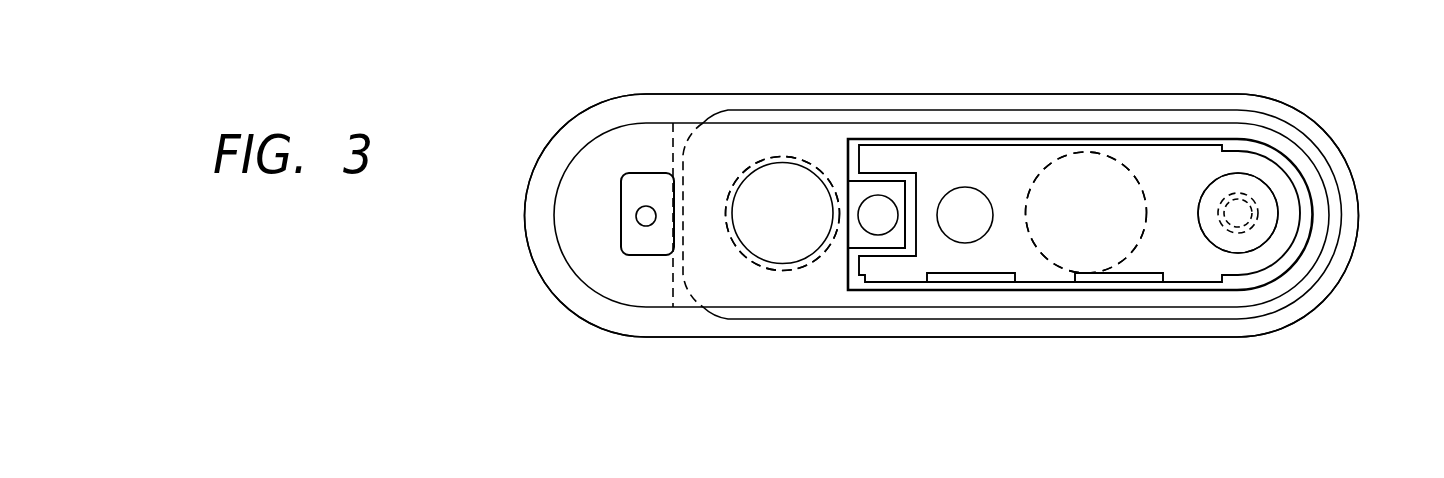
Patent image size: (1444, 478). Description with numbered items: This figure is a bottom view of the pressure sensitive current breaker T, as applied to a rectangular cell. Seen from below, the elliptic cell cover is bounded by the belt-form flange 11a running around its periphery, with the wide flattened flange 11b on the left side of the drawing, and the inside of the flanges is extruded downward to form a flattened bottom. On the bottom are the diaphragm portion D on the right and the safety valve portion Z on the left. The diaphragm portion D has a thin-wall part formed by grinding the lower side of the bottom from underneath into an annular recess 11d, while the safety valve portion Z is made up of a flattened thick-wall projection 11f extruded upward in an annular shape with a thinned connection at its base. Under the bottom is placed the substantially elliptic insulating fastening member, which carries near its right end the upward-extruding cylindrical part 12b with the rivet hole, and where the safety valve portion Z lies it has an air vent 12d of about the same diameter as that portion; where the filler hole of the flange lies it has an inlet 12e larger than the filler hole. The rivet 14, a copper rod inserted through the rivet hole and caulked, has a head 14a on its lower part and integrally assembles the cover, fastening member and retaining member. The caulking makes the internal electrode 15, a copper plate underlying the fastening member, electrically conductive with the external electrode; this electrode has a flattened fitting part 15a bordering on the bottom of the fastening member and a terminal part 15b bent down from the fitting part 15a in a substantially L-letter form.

The pressure sensitive current breaker T is at (543, 127).
The belt-form flange 11a is at (1352, 183).
The flattened flange 11b is at (553, 228).
The annular recess 11d is at (1145, 212).
The thick-wall projection 11f is at (805, 195).
The cylindrical part 12b is at (1253, 197).
The air vent 12d is at (735, 227).
The inlet 12e is at (972, 212).
The rivet 14 is at (1240, 178).
The head 14a is at (1198, 230).
The internal electrode 15 is at (998, 245).
The fitting part 15a is at (963, 257).
The terminal part 15b is at (1137, 285).
The diaphragm portion D is at (1085, 178).
The safety valve portion Z is at (772, 197).